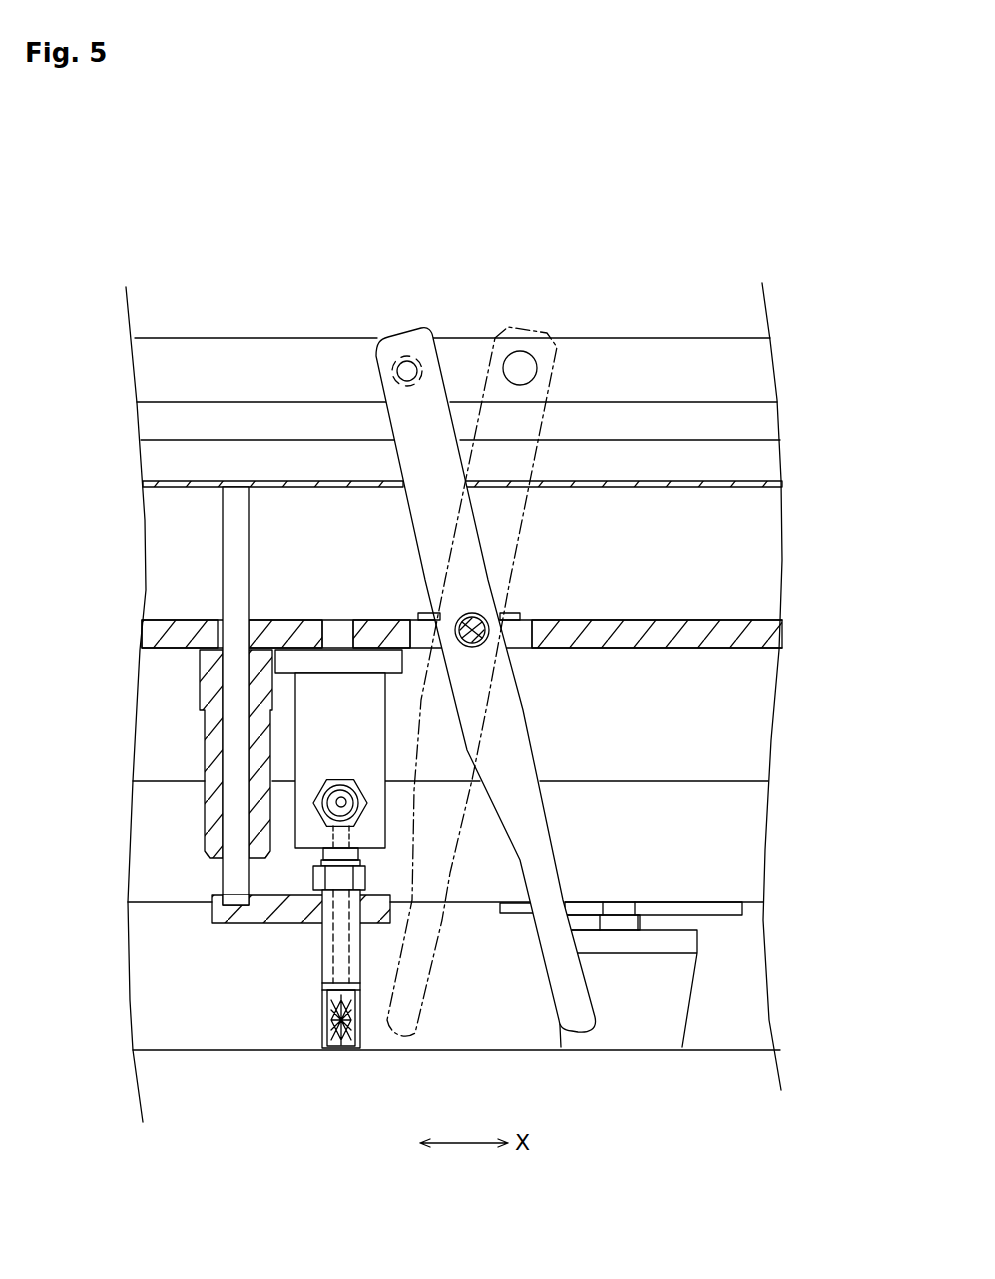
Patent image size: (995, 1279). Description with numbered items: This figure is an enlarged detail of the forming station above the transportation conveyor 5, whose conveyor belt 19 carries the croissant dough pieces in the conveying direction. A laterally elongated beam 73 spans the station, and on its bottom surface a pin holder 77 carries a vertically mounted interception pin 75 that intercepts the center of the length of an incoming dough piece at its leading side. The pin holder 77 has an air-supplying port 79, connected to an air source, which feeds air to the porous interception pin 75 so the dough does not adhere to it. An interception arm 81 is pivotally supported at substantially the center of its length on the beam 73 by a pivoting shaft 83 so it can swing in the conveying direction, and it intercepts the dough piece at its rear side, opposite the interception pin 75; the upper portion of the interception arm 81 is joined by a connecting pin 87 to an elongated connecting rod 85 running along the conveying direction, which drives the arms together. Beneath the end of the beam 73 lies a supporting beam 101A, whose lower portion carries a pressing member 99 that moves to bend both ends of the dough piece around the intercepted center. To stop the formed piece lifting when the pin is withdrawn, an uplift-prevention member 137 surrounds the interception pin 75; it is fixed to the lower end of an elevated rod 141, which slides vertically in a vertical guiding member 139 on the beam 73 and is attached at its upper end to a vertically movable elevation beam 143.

The transportation conveyor 5 is at (214, 1084).
The conveyor belt 19 is at (155, 1049).
The beam 73 is at (650, 621).
The interception pin 75 is at (320, 1022).
The pin holder 77 is at (352, 722).
The air-supplying port 79 is at (340, 787).
The interception arm 81 is at (517, 742).
The pivoting shaft 83 is at (490, 613).
The connecting rod 85 is at (255, 350).
The connecting pin 87 is at (410, 362).
The pressing member 99 is at (633, 1030).
The supporting beam 101A is at (745, 831).
The uplift-prevention member 137 is at (240, 920).
The vertical guiding member 139 is at (207, 758).
The elevated rod 141 is at (236, 828).
The elevation beam 143 is at (305, 463).